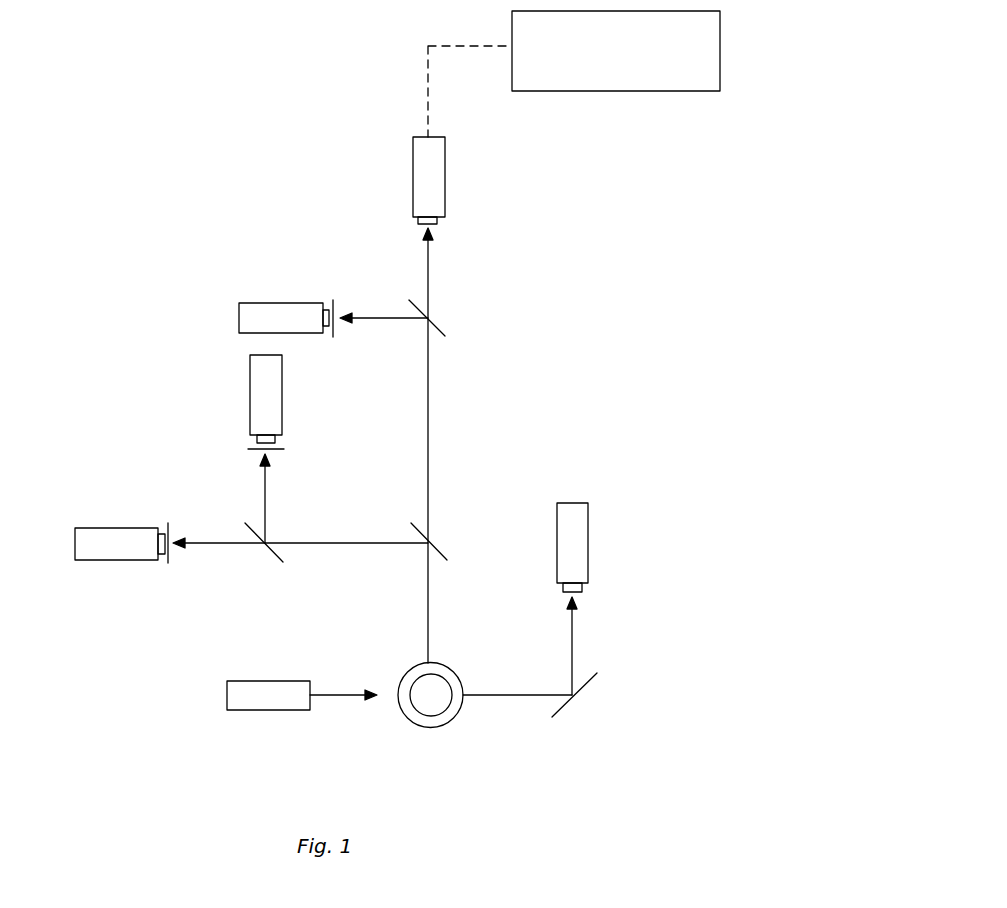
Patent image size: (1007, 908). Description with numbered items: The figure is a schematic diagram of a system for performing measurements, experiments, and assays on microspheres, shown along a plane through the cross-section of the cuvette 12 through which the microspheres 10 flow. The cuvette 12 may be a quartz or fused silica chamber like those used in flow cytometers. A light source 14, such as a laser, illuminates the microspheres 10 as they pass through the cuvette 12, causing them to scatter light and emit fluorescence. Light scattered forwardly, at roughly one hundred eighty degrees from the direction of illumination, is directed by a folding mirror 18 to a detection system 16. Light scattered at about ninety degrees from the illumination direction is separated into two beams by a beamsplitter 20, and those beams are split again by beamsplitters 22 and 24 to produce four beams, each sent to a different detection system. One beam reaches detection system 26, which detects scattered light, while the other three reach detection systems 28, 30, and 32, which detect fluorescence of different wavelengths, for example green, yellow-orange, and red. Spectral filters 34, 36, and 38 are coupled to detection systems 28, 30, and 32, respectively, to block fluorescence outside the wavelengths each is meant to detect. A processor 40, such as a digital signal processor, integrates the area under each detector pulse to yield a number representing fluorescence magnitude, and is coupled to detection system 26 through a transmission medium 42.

The microspheres 10 is at (436, 713).
The cuvette 12 is at (413, 723).
The light source 14 is at (227, 692).
The detection system 16 is at (590, 548).
The folding mirror 18 is at (590, 683).
The beamsplitter 20 is at (443, 555).
The beamsplitter 22 is at (272, 553).
The beamsplitter 24 is at (443, 333).
The detection system 26 is at (445, 175).
The detection system 28 is at (263, 303).
The detection system 30 is at (282, 402).
The detection system 32 is at (115, 528).
The spectral filter 34 is at (337, 303).
The spectral filter 36 is at (283, 451).
The spectral filter 38 is at (172, 528).
The processor 40 is at (602, 63).
The transmission medium 42 is at (428, 78).